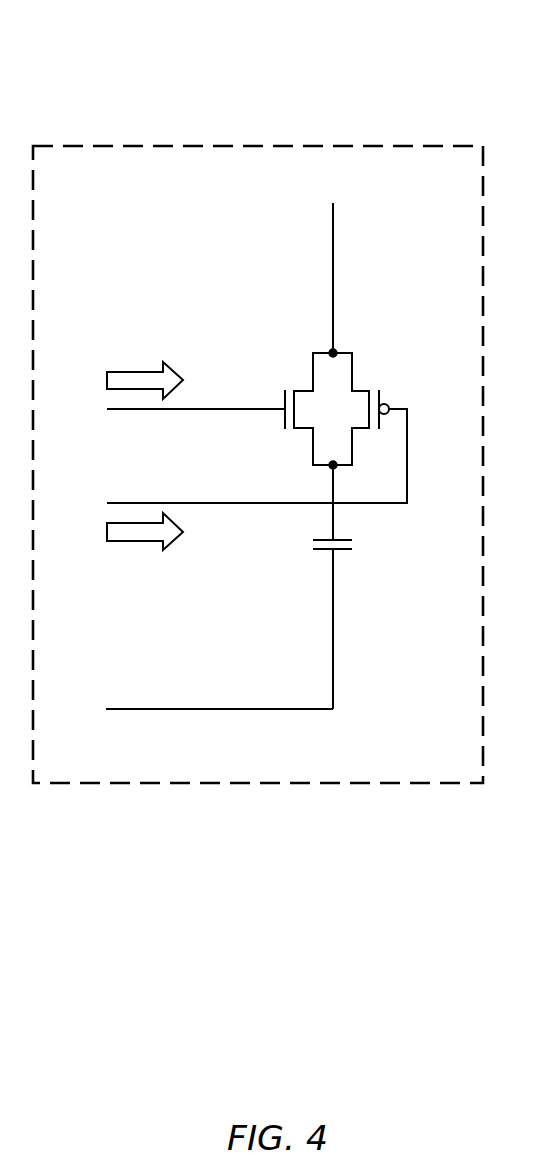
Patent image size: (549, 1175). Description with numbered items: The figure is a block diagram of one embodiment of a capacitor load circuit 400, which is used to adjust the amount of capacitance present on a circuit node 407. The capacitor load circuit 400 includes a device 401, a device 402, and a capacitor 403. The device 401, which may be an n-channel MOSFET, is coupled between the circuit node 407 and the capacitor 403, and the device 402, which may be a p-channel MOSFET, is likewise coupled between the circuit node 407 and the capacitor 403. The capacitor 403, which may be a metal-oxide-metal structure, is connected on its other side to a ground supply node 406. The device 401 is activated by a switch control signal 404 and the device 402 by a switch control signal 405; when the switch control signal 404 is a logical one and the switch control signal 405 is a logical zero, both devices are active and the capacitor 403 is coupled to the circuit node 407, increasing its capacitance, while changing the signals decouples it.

The capacitor load circuit 400 is at (321, 145).
The device 401 is at (294, 388).
The device 402 is at (375, 388).
The capacitor 403 is at (353, 544).
The switch control signal 404 is at (133, 370).
The switch control signal 405 is at (132, 542).
The ground supply node 406 is at (219, 697).
The circuit node 407 is at (333, 239).